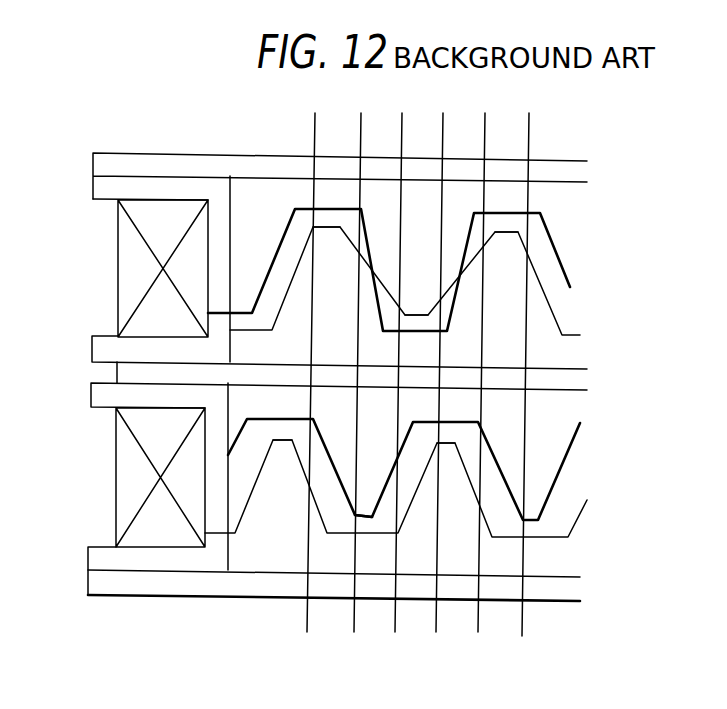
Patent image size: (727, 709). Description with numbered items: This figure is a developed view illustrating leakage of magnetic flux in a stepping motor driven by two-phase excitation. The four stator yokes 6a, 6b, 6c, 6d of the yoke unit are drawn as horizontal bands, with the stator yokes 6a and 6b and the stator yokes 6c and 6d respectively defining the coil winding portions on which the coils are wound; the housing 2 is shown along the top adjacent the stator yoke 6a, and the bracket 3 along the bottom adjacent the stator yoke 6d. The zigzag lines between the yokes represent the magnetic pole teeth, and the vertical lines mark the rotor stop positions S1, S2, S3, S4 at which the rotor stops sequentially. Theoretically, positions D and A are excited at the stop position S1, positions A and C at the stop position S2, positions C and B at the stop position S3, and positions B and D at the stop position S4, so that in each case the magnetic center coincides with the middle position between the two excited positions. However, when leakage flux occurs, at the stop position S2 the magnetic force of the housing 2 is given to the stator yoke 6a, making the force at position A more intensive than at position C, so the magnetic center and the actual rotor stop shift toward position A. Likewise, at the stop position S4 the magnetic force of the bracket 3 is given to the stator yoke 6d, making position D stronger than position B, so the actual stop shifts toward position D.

The housing 2 is at (565, 168).
The bracket 3 is at (563, 590).
The stator yoke 6a is at (93, 190).
The stator yoke 6b is at (92, 353).
The stator yoke 6c is at (91, 397).
The stator yoke 6d is at (88, 562).
The rotor stop position S1 is at (437, 390).
The rotor stop position S2 is at (395, 390).
The rotor stop position S3 is at (355, 390).
The rotor stop position S4 is at (306, 390).
The position A is at (416, 298).
The position B is at (415, 245).
The position C is at (364, 500).
The position D is at (364, 464).